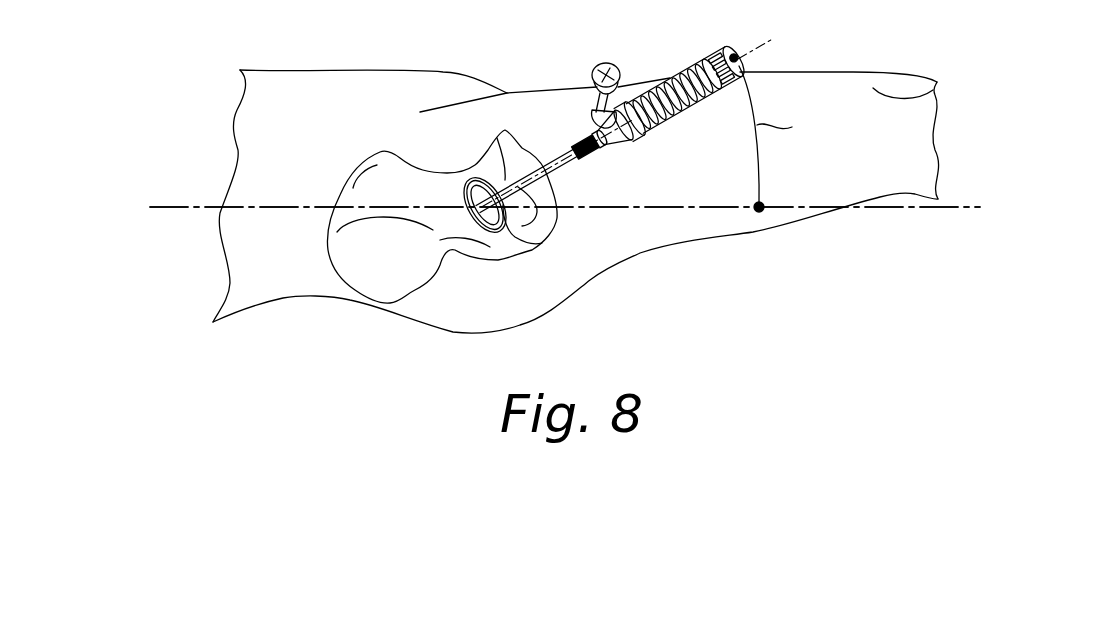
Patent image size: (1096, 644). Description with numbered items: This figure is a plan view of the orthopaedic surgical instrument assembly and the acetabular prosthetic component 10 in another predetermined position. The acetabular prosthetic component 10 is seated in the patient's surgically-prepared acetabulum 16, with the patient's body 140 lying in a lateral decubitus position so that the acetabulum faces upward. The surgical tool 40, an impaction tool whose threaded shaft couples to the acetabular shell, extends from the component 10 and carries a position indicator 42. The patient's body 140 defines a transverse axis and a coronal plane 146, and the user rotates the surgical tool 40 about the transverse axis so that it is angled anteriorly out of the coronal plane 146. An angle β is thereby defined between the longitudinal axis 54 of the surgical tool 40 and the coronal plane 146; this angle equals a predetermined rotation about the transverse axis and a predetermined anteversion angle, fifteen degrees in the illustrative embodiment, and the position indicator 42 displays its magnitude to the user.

The acetabular prosthetic component 10 is at (546, 247).
The surgically-prepared acetabulum 16 is at (477, 158).
The surgical tool 40 is at (640, 132).
The position indicator 42 is at (597, 94).
The longitudinal axis 54 is at (758, 53).
The patient's body 140 is at (338, 76).
The coronal plane 146 is at (903, 207).